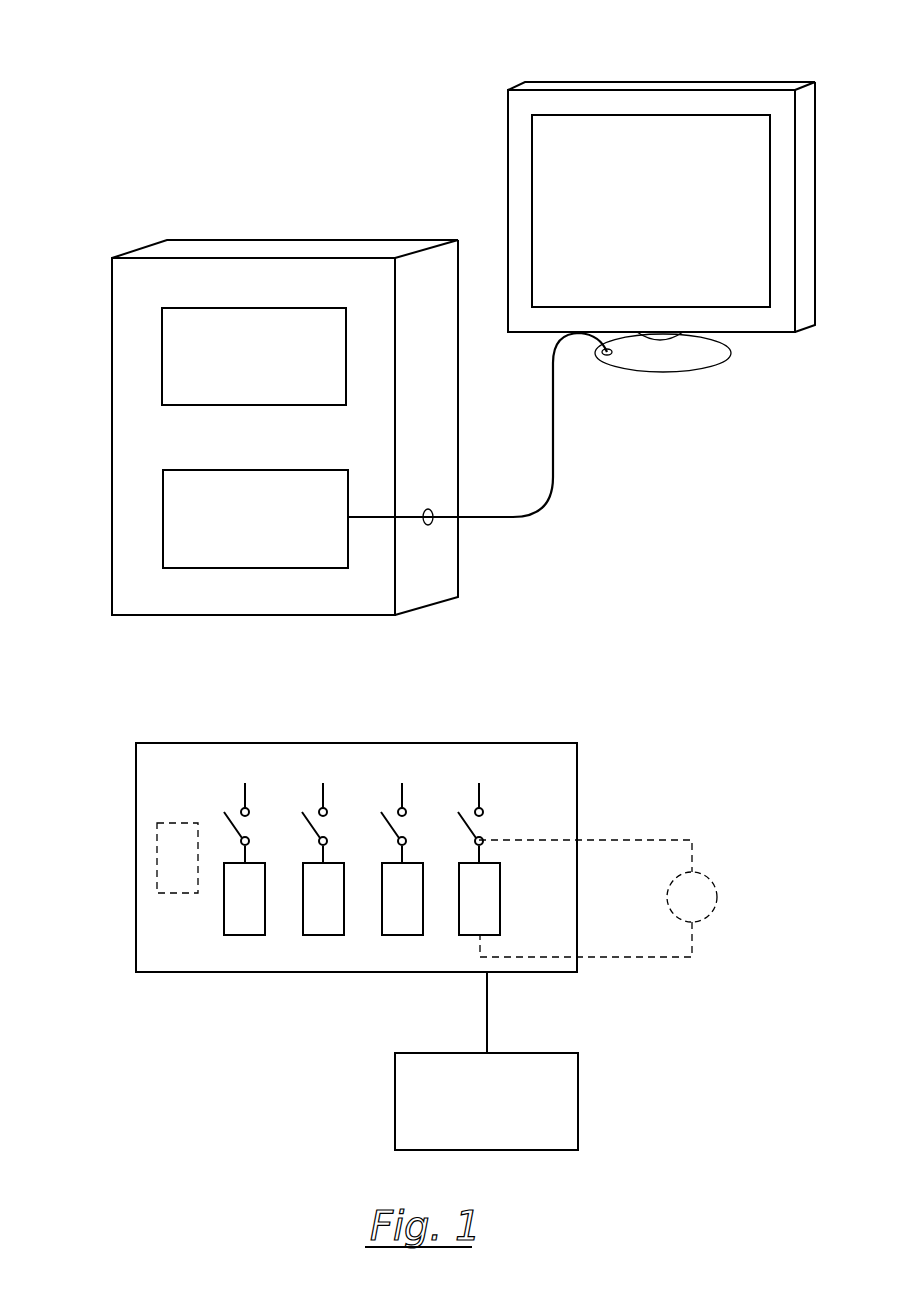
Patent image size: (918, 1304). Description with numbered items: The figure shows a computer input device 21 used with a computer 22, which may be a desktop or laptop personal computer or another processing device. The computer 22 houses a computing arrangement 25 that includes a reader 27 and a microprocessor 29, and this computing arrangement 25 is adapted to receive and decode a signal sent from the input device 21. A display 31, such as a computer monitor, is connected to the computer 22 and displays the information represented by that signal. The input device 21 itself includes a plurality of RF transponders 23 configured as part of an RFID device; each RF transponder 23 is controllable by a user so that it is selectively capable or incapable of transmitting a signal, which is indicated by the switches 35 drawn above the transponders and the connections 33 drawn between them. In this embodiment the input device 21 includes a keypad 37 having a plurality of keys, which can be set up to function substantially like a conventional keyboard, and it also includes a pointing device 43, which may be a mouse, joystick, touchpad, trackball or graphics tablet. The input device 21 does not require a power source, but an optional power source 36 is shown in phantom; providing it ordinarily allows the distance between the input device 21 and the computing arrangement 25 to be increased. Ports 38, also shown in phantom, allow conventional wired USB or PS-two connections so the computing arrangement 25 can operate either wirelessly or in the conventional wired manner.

The computer input device 21 is at (631, 924).
The computer 22 is at (259, 215).
The RF transponder 23 is at (214, 963).
The computing arrangement 25 is at (136, 362).
The reader 27 is at (176, 328).
The microprocessor 29 is at (165, 528).
The display 31 is at (621, 65).
The connection lead 33 is at (250, 930).
The switch 35 is at (320, 795).
The power source 36 is at (718, 895).
The keypad 37 is at (602, 761).
The ports 38 is at (172, 832).
The pointing device 43 is at (606, 1101).